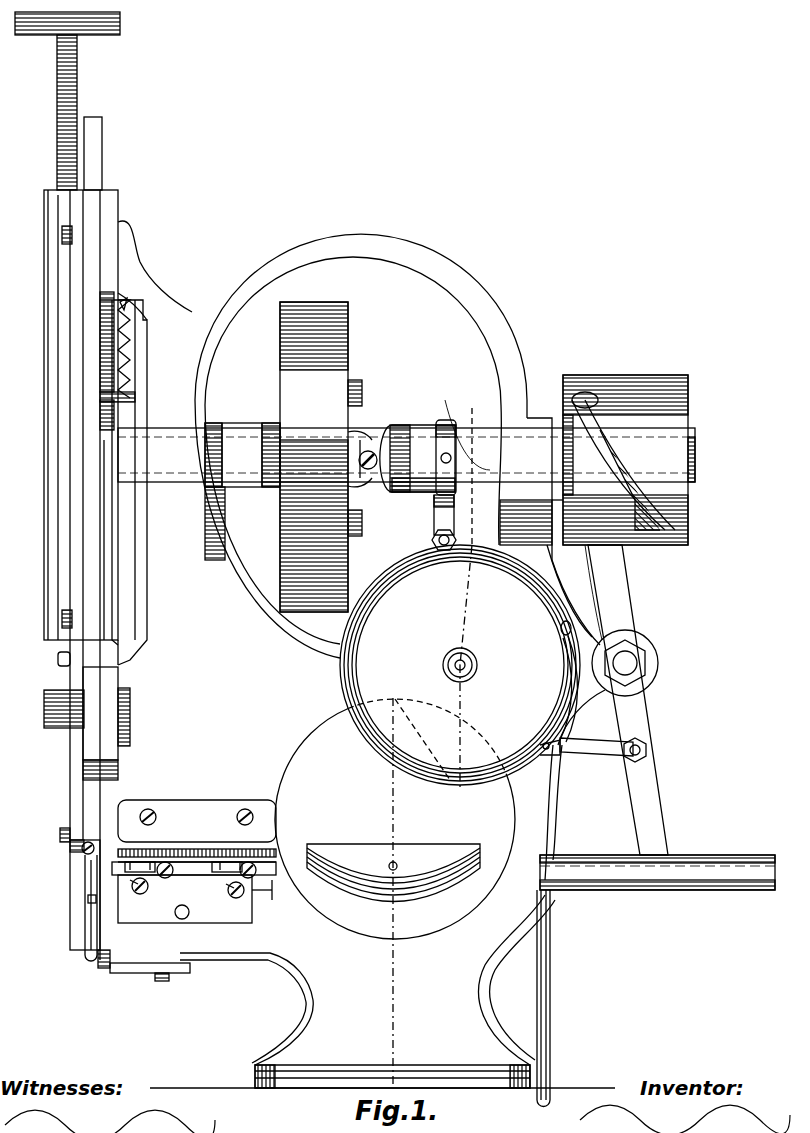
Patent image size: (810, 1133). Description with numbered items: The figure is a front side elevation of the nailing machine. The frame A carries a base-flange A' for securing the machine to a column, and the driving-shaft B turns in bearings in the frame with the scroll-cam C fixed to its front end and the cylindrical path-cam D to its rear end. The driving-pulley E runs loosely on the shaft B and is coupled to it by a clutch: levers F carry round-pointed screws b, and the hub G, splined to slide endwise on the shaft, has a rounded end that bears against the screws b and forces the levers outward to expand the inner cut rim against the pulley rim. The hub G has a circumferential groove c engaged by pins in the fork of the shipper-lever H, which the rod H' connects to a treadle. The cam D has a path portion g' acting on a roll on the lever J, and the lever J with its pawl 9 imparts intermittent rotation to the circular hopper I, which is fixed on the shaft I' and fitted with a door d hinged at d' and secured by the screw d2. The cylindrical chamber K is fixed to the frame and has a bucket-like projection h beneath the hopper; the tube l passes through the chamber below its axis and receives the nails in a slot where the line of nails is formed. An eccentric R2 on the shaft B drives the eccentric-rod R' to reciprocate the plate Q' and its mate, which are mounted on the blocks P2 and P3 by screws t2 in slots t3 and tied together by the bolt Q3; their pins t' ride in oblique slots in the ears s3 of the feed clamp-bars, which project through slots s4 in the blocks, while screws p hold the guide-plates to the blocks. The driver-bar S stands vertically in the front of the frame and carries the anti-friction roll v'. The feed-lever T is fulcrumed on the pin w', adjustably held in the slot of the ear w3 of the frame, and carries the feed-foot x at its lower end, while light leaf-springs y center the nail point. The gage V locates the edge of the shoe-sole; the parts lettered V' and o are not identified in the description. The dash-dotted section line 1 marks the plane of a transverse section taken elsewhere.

The frame A is at (361, 643).
The base-flange A' is at (392, 1077).
The section line 1 is at (435, 740).
The driver-bar S is at (67, 101).
The scroll-cam C is at (110, 398).
The anti-friction roll v' is at (110, 333).
The feed-lever T is at (78, 858).
The ear w3 is at (100, 723).
The fulcrum-pin w' is at (133, 717).
The driving-shaft B is at (415, 455).
The eccentric R2 is at (242, 455).
The eccentric-rod R' is at (223, 523).
The driving-pulley E is at (321, 457).
The lever F is at (360, 460).
The round-pointed steel screw b is at (368, 449).
The hub G is at (417, 458).
The circumferential groove c is at (444, 428).
The shipper-lever H is at (450, 475).
The cylindrical path-cam D is at (625, 460).
The cam path g' is at (623, 460).
The circular hopper I is at (460, 667).
The hopper shaft I' is at (466, 665).
The screw d2 is at (563, 628).
The door d is at (559, 689).
The hinge d' is at (561, 755).
The lever J is at (626, 700).
The pawl 9 is at (603, 749).
The tube l is at (657, 863).
The rod H' is at (554, 998).
The cylindrical chamber K is at (395, 819).
The bucket-like projection h is at (393, 873).
The adjustable gage V is at (197, 831).
The screws p is at (199, 821).
The plate Q' is at (194, 892).
The bolt Q3 is at (182, 918).
The block P2 is at (206, 874).
The block P3 is at (273, 894).
The pins t' is at (173, 877).
The screws t2 is at (193, 889).
The slots t3 is at (181, 890).
The slots s4 is at (198, 860).
The ears s3 is at (180, 860).
The plate V' is at (150, 976).
The screw o is at (82, 871).
The leaf-springs y is at (92, 930).
The feed-foot x is at (100, 965).